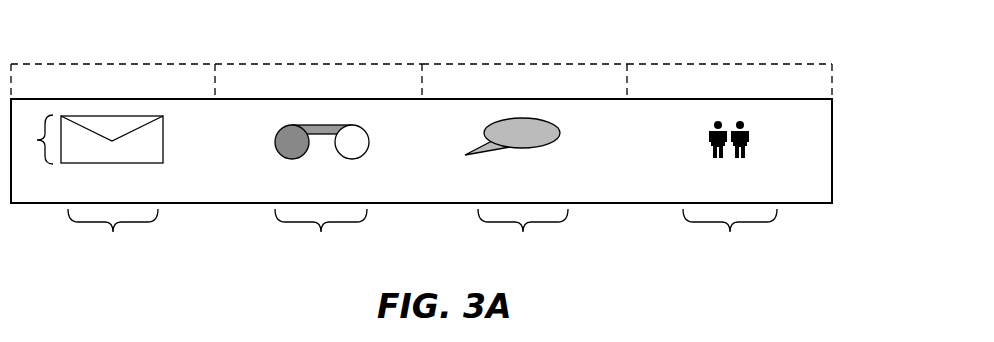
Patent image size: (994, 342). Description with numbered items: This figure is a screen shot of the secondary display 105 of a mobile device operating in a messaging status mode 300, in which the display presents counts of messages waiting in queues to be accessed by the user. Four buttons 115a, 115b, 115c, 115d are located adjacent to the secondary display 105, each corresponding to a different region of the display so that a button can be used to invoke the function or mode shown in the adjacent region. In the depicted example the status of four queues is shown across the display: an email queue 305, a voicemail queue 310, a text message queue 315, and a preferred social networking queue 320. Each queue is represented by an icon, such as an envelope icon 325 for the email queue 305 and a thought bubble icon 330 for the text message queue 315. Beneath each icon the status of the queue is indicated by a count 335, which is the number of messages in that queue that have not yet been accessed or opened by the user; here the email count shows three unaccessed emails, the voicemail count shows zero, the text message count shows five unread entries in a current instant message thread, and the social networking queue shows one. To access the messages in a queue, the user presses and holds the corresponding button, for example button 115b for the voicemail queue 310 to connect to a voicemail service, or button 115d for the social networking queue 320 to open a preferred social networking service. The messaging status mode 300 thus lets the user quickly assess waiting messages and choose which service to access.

The secondary display 105 is at (832, 148).
The button 115a is at (110, 63).
The button 115b is at (318, 63).
The button 115c is at (522, 63).
The button 115d is at (730, 63).
The messaging status mode 300 is at (36, 141).
The email queue 305 is at (133, 189).
The voicemail queue 310 is at (322, 194).
The text message queue 315 is at (559, 191).
The preferred social networking queue 320 is at (730, 192).
The envelope icon 325 is at (156, 128).
The thought bubble icon 330 is at (561, 136).
The count 335 is at (136, 184).